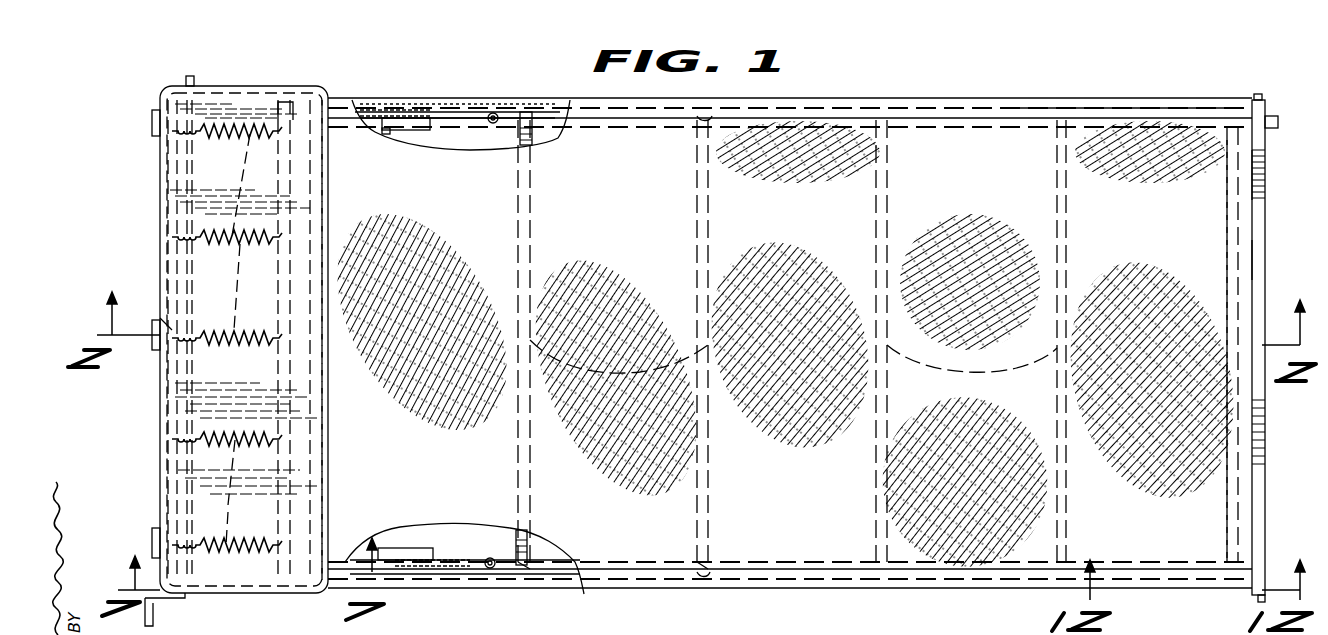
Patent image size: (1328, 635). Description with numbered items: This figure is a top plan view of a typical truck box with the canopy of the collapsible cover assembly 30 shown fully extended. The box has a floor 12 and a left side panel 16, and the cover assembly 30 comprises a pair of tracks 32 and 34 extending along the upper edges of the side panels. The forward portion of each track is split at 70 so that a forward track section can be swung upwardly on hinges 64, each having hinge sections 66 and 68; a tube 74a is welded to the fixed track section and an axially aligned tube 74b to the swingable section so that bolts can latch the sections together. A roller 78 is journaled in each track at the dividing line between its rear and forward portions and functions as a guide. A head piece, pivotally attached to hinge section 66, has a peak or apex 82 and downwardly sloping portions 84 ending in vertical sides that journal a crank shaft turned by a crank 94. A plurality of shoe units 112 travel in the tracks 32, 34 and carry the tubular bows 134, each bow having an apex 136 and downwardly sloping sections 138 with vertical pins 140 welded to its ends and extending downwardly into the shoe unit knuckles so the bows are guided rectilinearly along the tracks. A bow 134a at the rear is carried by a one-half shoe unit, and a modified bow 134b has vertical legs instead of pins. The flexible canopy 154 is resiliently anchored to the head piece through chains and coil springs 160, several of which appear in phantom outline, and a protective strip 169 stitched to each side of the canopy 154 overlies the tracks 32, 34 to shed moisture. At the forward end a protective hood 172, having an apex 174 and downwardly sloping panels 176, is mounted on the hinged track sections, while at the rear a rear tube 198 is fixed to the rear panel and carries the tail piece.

The floor 12 is at (455, 540).
The left side panel 16 is at (442, 150).
The collapsible cover assembly 30 is at (816, 222).
The track 32 is at (555, 594).
The track 34 is at (448, 104).
The hinge 64 is at (158, 90).
The hinge section 66 is at (176, 128).
The hinge section 68 is at (152, 112).
The split 70 is at (408, 112).
The tube 74a is at (418, 130).
The tube 74b is at (388, 134).
The roller 78 is at (497, 112).
The peak or apex 82 is at (172, 318).
The downwardly sloping portion 84 is at (168, 160).
The crank 94 is at (165, 604).
The shoe unit 112 is at (528, 106).
The bow 134 is at (695, 234).
The bow 134a is at (1232, 223).
The bow 134b is at (1265, 194).
The peak or apex 136 is at (793, 363).
The downwardly sloping section 138 is at (697, 192).
The vertical pin 140 is at (880, 565).
The flexible canopy 154 is at (985, 125).
The coil spring 160 is at (230, 339).
The protective strip 169 is at (898, 118).
The protective hood 172 is at (300, 398).
The peak or apex 174 is at (310, 345).
The downwardly sloping panel 176 is at (315, 312).
The rear tube 198 is at (1262, 268).